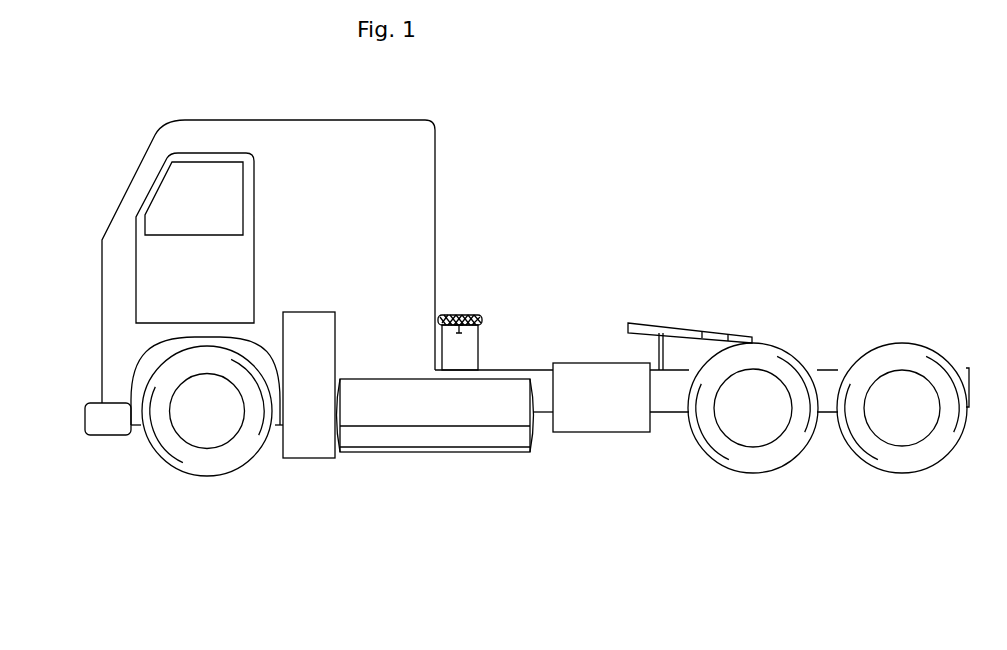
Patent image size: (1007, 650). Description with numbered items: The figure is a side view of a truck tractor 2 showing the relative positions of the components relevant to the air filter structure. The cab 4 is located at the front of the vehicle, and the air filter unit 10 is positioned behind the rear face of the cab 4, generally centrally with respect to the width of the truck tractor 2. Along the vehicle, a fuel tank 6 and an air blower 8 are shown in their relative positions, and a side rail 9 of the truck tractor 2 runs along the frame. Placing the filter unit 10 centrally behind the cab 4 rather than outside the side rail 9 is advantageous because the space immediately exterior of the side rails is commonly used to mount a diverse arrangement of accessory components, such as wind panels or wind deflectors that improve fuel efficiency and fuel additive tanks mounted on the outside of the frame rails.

The truck tractor 2 is at (527, 337).
The cab 4 is at (383, 198).
The fuel tank 6 is at (440, 410).
The air blower 8 is at (624, 419).
The side rail 9 is at (542, 382).
The filter unit 10 is at (493, 335).